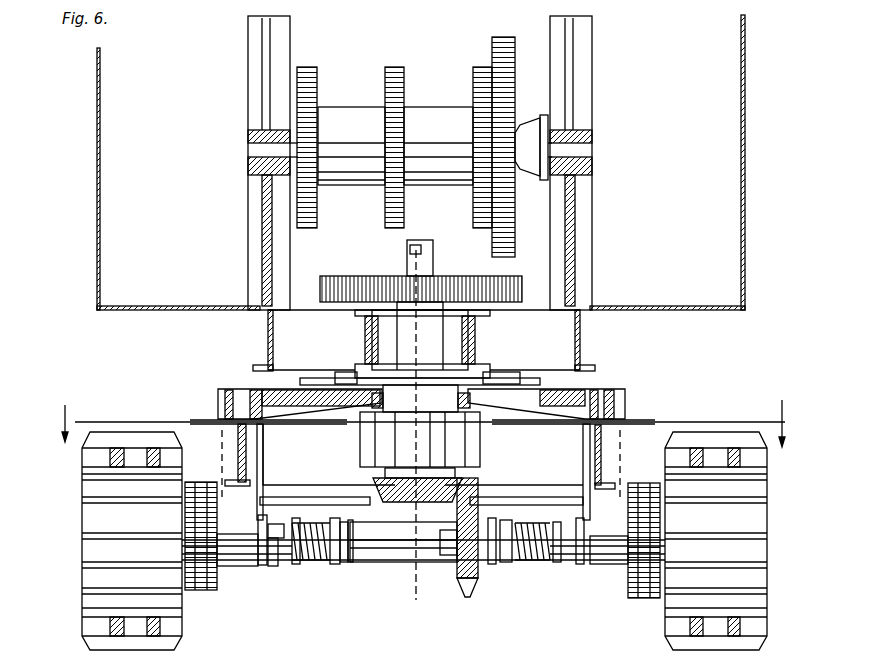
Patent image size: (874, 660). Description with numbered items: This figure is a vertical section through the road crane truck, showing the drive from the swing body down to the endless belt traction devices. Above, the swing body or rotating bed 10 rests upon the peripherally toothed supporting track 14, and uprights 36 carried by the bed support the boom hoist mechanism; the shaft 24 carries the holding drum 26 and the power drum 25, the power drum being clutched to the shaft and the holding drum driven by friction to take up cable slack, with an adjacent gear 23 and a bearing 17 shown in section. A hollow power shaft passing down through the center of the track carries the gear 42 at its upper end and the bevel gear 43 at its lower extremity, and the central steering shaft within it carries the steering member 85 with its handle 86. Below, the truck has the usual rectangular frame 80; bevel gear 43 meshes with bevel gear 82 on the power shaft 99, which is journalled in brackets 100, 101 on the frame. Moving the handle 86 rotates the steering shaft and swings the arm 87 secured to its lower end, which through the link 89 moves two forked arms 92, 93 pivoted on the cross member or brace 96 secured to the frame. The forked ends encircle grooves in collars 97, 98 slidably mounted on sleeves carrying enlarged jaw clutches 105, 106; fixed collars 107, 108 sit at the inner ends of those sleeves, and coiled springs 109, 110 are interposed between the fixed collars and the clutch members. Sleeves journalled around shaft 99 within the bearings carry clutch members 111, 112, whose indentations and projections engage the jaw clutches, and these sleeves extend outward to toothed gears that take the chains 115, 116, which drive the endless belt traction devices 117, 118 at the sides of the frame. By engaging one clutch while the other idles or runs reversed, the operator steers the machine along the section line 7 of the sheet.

The section line 7- 7 is at (422, 423).
The swing body or rotating bed 10 is at (268, 334).
The supporting track 14 is at (232, 388).
The bearing cap 17 is at (345, 372).
The gear 23 is at (497, 40).
The shaft 24 is at (592, 145).
The power drum 25 is at (438, 114).
The holding drum 26 is at (348, 106).
The uprights 36 is at (262, 79).
The gear 42 is at (522, 286).
The bevel gear 43 is at (378, 480).
The rectangular frame 80 is at (240, 446).
The bevel gear 82 is at (460, 598).
The steering lever 85 is at (433, 264).
The handle 86 is at (409, 252).
The arm 87 is at (478, 466).
The link 89 is at (445, 556).
The forked arm 92 is at (500, 505).
The forked arm 93 is at (335, 503).
The cross member or brace 96 is at (288, 498).
The collar 97 is at (510, 566).
The collar 98 is at (338, 564).
The power shaft 99 is at (398, 560).
The bracket 100 is at (592, 562).
The bracket 101 is at (261, 566).
The jaw clutch 105 is at (560, 566).
The jaw clutch 106 is at (305, 563).
The fixed collar 107 is at (491, 564).
The fixed collar 108 is at (355, 566).
The coiled spring 109 is at (540, 563).
The coiled spring 110 is at (318, 566).
The clutch member 111 is at (582, 566).
The clutch member 112 is at (270, 567).
The chain 115 is at (651, 598).
The chain 116 is at (205, 588).
The endless belt traction device 117 is at (82, 576).
The endless belt traction device 118 is at (752, 432).